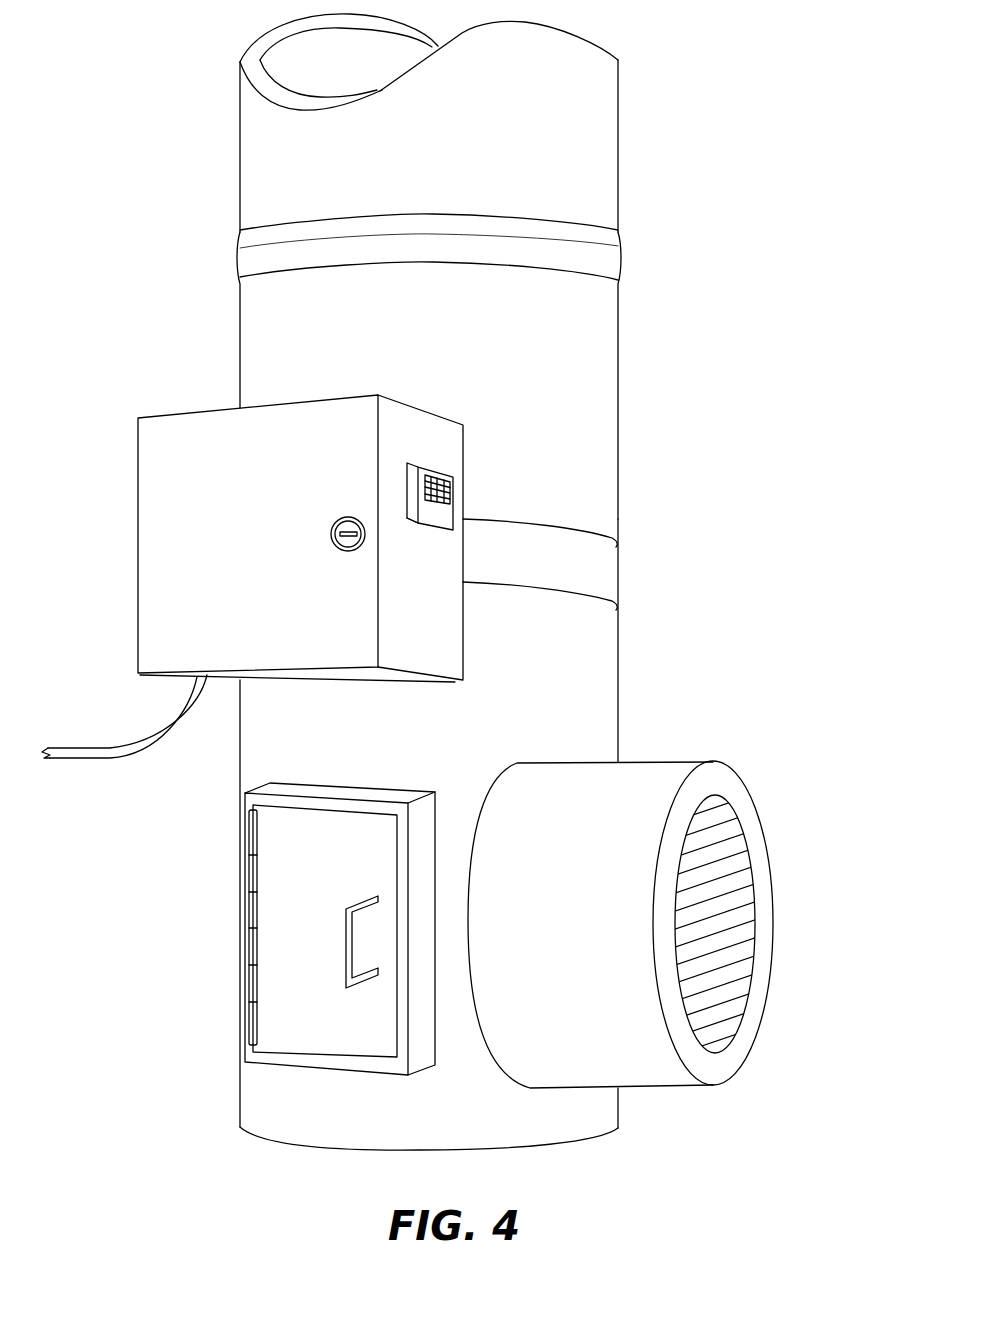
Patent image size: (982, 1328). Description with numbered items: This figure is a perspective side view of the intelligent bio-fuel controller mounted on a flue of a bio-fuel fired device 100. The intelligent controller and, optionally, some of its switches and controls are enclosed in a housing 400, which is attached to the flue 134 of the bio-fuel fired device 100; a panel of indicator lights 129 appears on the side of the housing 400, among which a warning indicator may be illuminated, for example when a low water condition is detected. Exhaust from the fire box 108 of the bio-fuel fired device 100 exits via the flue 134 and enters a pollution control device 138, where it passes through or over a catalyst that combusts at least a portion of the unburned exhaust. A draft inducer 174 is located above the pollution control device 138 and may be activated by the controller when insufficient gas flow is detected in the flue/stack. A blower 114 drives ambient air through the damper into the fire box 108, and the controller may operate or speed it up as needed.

The bio-fuel fired device 100 is at (682, 567).
The draft inducer 174 is at (592, 157).
The pollution control device 138 is at (595, 365).
The flue 134 is at (599, 673).
The housing 400 is at (175, 440).
The indicator lights 129 is at (453, 481).
The fire box 108 is at (250, 1102).
The blower 114 is at (758, 812).